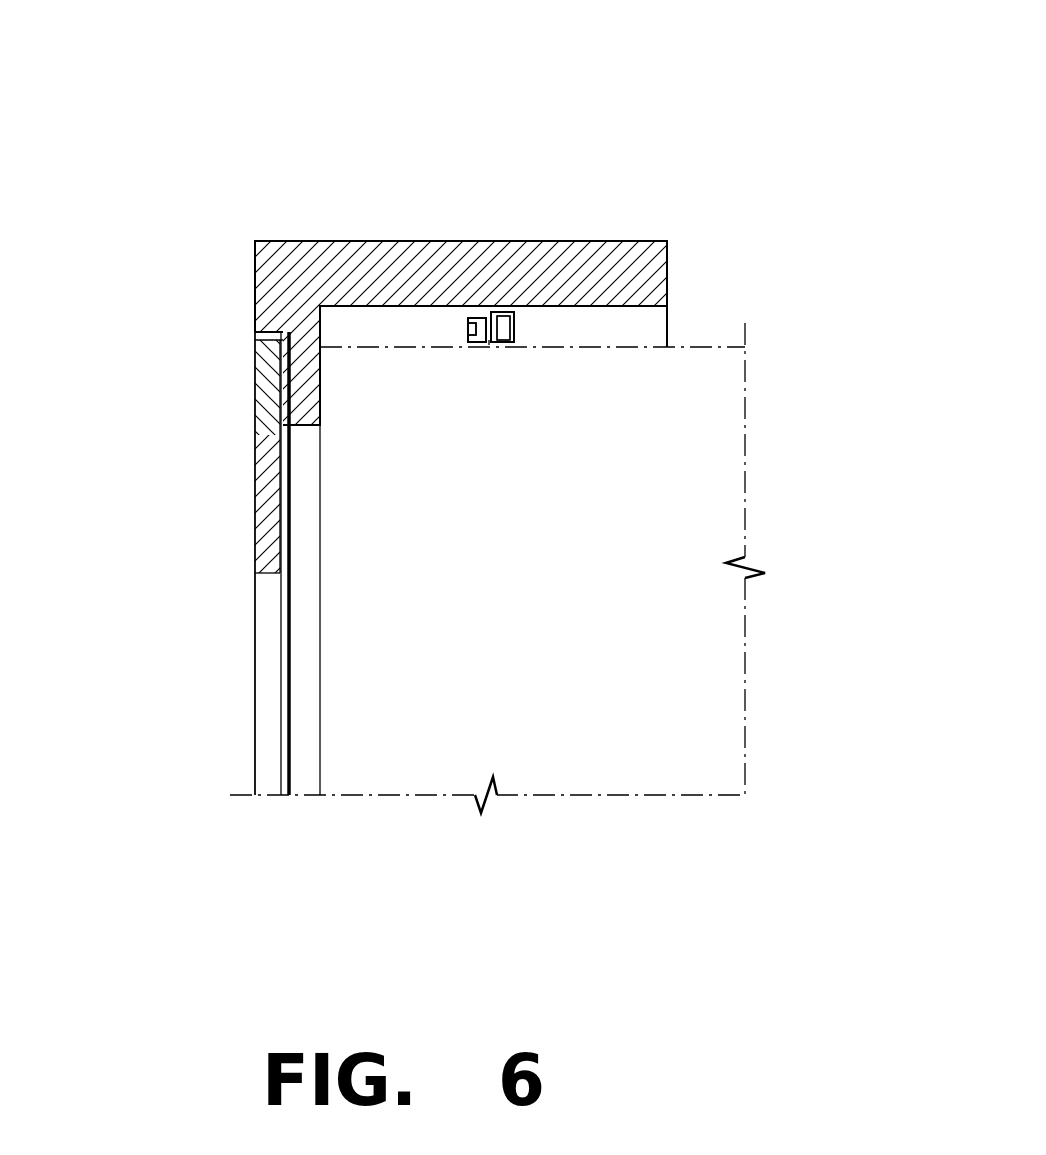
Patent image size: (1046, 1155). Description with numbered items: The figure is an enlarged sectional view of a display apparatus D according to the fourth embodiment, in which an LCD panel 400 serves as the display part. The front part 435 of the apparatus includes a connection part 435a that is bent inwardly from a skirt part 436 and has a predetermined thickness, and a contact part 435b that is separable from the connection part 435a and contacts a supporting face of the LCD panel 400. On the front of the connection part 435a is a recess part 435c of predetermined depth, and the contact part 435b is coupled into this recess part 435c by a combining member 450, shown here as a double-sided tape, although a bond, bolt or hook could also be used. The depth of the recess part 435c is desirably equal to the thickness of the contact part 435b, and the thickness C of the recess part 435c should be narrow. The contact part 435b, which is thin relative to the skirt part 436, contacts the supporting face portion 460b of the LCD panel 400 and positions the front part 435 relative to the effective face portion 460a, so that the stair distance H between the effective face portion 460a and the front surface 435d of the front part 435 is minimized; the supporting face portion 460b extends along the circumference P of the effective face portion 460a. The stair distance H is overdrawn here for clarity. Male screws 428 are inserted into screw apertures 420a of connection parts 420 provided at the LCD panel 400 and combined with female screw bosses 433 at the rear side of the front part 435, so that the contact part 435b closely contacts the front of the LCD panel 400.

The LCD panel 400 is at (745, 718).
The connection part 420 is at (494, 312).
The screw aperture 420a is at (489, 345).
The male screw 428 is at (512, 314).
The female screw boss 433 is at (468, 322).
The front part 435 is at (108, 296).
The connection part 435a is at (255, 297).
The contact part 435b is at (255, 497).
The recess part 435c is at (255, 368).
The front surface 435d is at (250, 533).
The skirt part 436 is at (281, 241).
The combining member 450 is at (292, 394).
The effective face portion 460a is at (280, 730).
The supporting face portion 460b is at (325, 450).
The thickness of the recess part C is at (225, 643).
The stair distance H is at (322, 880).
The circumference P is at (275, 580).
The display apparatus D is at (737, 170).